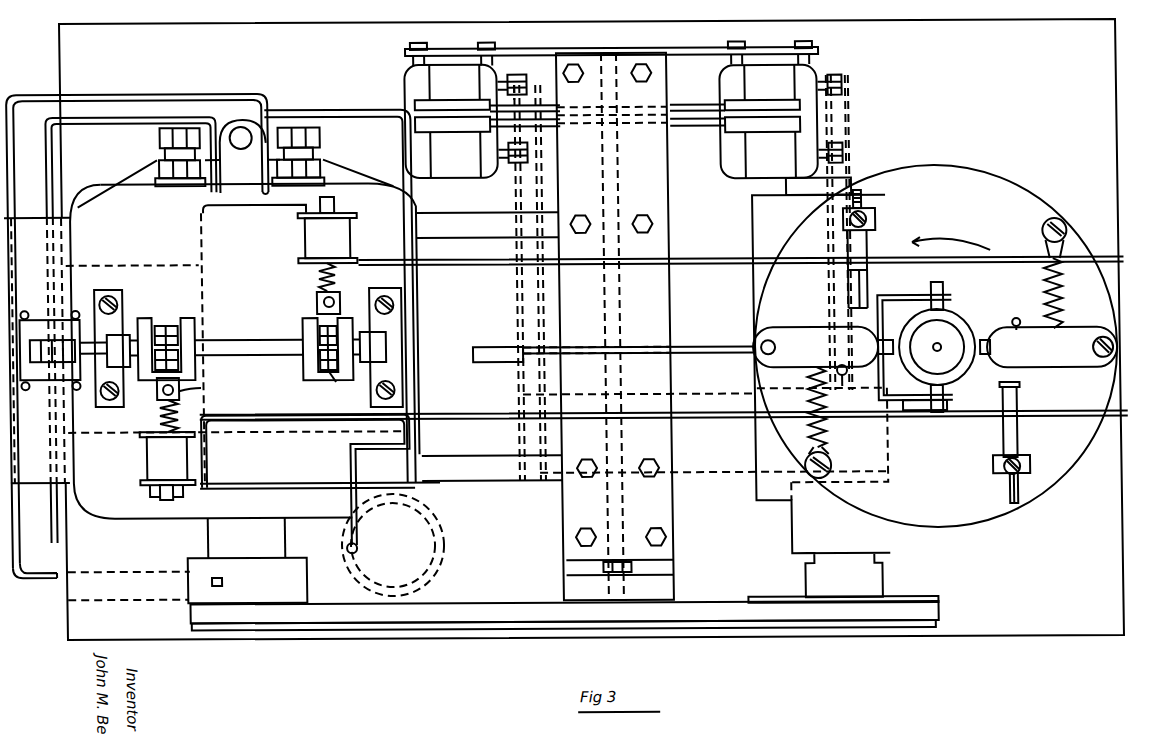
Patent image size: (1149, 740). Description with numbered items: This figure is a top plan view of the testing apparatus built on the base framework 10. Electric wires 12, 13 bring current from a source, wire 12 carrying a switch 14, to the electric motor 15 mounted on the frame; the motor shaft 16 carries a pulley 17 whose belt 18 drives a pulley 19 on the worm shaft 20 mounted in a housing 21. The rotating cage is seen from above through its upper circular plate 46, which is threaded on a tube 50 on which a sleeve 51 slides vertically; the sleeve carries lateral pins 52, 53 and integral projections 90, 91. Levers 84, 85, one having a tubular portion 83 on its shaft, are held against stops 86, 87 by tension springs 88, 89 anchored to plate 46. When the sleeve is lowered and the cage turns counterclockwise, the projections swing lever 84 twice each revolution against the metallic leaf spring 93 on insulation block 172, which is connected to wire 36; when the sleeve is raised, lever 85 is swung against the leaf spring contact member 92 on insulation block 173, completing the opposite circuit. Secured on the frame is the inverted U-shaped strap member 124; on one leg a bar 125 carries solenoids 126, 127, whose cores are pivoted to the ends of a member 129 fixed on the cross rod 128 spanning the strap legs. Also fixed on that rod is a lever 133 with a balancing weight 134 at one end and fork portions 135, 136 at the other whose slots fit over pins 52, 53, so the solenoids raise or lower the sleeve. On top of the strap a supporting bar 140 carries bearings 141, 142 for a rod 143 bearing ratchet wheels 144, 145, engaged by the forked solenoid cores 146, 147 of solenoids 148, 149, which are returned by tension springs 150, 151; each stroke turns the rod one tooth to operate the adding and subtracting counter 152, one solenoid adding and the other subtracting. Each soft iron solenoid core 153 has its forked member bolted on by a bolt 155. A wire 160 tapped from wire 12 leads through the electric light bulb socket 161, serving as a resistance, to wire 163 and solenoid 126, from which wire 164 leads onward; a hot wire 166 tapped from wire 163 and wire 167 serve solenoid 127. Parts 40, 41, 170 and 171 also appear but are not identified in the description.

The base framework 10 is at (1052, 632).
The electric wire 12 is at (148, 94).
The electric wire 13 is at (104, 118).
The switch 14 is at (118, 604).
The electric motor 15 is at (290, 518).
The motor shaft 16 is at (206, 538).
The pulley 17 is at (308, 603).
The belt 18 is at (340, 608).
The pulley 19 is at (938, 600).
The worm shaft 20 is at (848, 627).
The housing 21 is at (780, 502).
The wire 36 is at (1018, 484).
The shaft 40 is at (700, 262).
The shaft 41 is at (705, 420).
The upper circular plate 46 is at (935, 346).
The tube 50 is at (955, 331).
The tube (sleeve) 51 is at (960, 372).
The pin 52 is at (946, 414).
The pin 53 is at (938, 292).
The tubular portion 83 is at (829, 464).
The lever 84 is at (826, 363).
The lever 85 is at (1052, 347).
The stop 86 is at (842, 376).
The stop 87 is at (1016, 319).
The tension spring 88 is at (824, 426).
The tension spring 89 is at (1054, 286).
The projection 90 is at (888, 340).
The projection 91 is at (984, 340).
The leaf spring contact member 92 is at (1017, 430).
The metallic leaf spring 93 is at (864, 262).
The inverted U-shaped strap member 124 is at (638, 57).
The bar 125 is at (530, 53).
The solenoid 126 is at (466, 122).
The solenoid 127 is at (785, 130).
The cross rod 128 is at (622, 305).
The member 129 is at (690, 122).
The lever 133 is at (700, 348).
The balancing weight 134 is at (495, 364).
The fork portion 135 is at (905, 410).
The fork portion 136 is at (878, 296).
The supporting bar 140 is at (27, 221).
The bearing 141 is at (110, 330).
The bearing 142 is at (400, 340).
The rod 143 is at (235, 342).
The ratchet wheel 144 is at (164, 322).
The ratchet wheel 145 is at (336, 382).
The solenoid core 146 is at (201, 388).
The solenoid core 147 is at (315, 333).
The solenoid 148 is at (168, 458).
The solenoid 149 is at (328, 238).
The tension spring 150 is at (158, 427).
The tension spring 151 is at (317, 283).
The adding and subtracting counter 152 is at (45, 319).
The soft iron solenoid core 153 is at (334, 205).
The bolt 155 is at (316, 302).
The wire 160 is at (360, 110).
The electric light bulb socket 161 is at (859, 390).
The wire 163 is at (520, 296).
The wire 164 is at (555, 198).
The hot wire 166 is at (632, 396).
The wire 167 is at (852, 126).
The bracket 170 is at (282, 485).
The plate 171 is at (262, 215).
The insulation block 172 is at (875, 224).
The insulation block 173 is at (1030, 452).